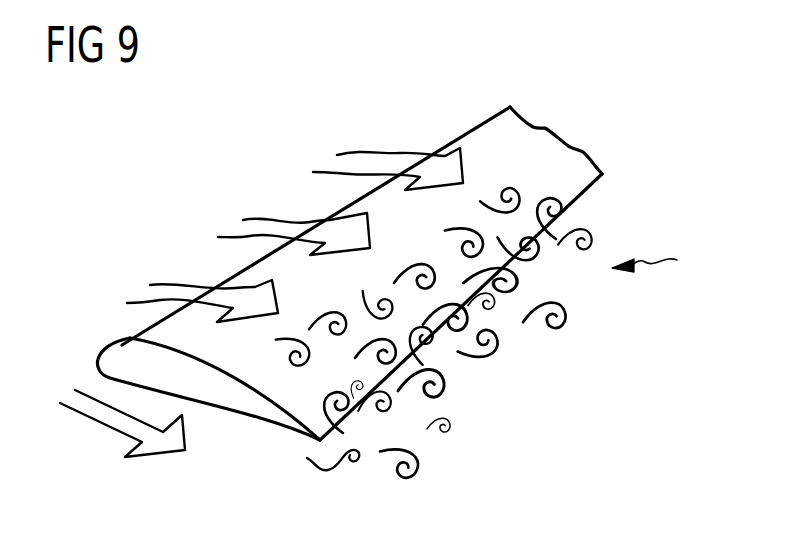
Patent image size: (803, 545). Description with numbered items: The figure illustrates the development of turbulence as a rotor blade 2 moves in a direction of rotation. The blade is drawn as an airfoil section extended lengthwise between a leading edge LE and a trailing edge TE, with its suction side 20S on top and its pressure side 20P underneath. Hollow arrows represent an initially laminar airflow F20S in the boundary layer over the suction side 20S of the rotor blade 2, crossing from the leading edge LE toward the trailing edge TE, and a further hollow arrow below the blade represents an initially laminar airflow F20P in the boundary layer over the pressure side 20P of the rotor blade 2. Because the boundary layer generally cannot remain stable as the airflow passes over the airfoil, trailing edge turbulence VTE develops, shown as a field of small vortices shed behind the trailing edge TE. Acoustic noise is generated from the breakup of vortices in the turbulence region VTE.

The rotor blade 2 is at (367, 274).
The suction side 20S is at (158, 338).
The pressure side 20P is at (250, 417).
The leading edge LE is at (480, 123).
The trailing edge TE is at (590, 182).
The trailing edge turbulence VTE is at (668, 262).
The laminar airflow over the suction side F20S is at (167, 290).
The laminar airflow over the pressure side F20P is at (108, 418).